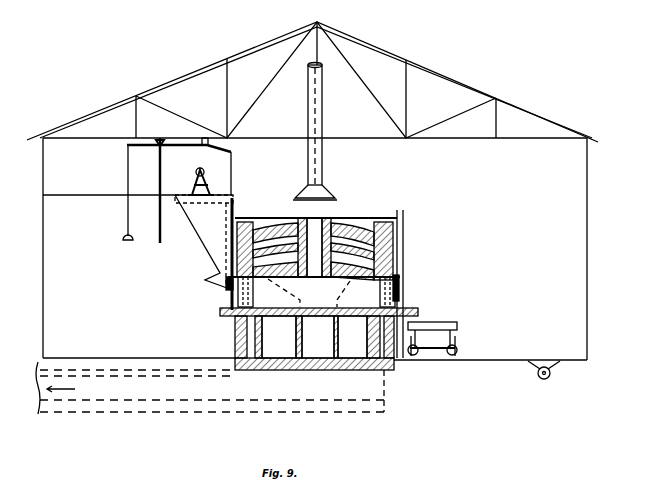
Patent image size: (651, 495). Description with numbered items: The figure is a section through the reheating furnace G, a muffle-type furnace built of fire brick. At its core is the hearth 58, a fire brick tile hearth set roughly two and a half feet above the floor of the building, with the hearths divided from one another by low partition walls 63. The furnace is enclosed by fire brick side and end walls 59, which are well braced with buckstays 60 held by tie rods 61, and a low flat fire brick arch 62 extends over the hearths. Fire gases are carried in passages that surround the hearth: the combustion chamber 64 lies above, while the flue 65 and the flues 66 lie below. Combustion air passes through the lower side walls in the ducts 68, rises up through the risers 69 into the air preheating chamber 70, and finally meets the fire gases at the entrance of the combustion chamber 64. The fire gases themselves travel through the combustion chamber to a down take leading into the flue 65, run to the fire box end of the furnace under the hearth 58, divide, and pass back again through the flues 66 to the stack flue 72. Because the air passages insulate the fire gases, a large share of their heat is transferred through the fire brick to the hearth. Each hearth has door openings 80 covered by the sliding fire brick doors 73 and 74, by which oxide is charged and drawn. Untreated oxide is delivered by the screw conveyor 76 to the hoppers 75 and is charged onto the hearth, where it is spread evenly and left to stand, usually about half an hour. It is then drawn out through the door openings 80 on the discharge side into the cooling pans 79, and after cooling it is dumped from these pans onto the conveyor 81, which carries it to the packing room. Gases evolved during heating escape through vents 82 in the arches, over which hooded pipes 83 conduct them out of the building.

The hearth 58 is at (324, 303).
The side and end walls 59 is at (256, 231).
The buckstays 60 is at (416, 209).
The tie rods 61 is at (386, 215).
The fire brick arch 62 is at (339, 284).
The partition walls 63 is at (307, 284).
The combustion chamber 64 is at (306, 267).
The flue 65 is at (318, 337).
The flues 66 is at (314, 337).
The ducts 68 is at (251, 334).
The risers 69 is at (226, 291).
The air preheating chamber 70 is at (352, 249).
The stack flue 72 is at (210, 388).
The sliding fire brick door 73 is at (229, 303).
The sliding fire brick door 74 is at (404, 298).
The hoppers 75 is at (226, 219).
The screw conveyor 76 is at (196, 171).
The cooling pans 79 is at (437, 322).
The door openings 80 is at (316, 292).
The conveyor 81 is at (546, 356).
The vents 82 is at (318, 222).
The hooded pipes 83 is at (322, 166).
The reheating furnace G is at (397, 268).